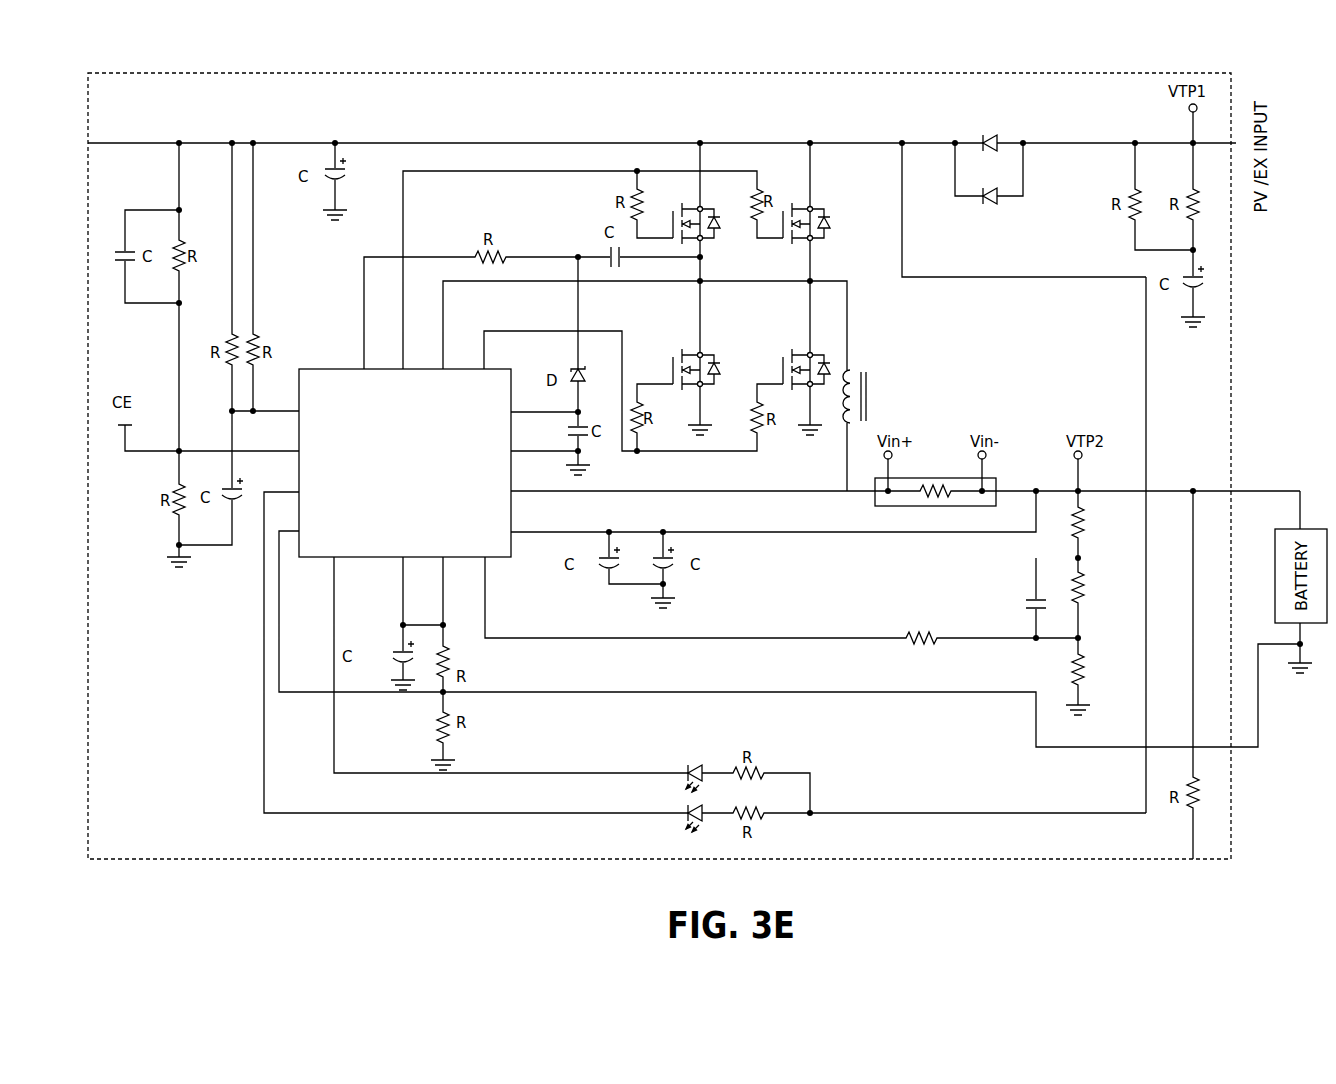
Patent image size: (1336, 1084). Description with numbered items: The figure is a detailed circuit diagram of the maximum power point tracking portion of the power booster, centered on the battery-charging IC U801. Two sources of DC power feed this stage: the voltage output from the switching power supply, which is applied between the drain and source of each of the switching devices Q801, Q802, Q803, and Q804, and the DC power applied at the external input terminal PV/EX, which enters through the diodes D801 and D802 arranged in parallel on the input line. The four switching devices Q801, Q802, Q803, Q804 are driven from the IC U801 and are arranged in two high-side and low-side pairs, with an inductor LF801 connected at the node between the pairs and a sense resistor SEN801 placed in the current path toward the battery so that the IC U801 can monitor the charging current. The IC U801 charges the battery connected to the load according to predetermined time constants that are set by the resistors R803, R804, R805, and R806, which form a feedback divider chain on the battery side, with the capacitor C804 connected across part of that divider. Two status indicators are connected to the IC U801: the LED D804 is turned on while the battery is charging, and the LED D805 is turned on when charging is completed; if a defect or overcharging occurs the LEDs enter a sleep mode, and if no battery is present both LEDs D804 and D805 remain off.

The IC U801 is at (405, 518).
The switching device Q801 is at (711, 232).
The switching device Q802 is at (679, 360).
The switching device Q803 is at (821, 232).
The switching device Q804 is at (793, 360).
The inductor LF801 is at (881, 396).
The diode D801 is at (988, 132).
The diode D802 is at (988, 206).
The LED D804 is at (692, 828).
The LED D805 is at (692, 768).
The current sense resistor SEN801 is at (935, 479).
The resistor R803 is at (1101, 523).
The resistor R804 is at (1101, 588).
The resistor R805 is at (1101, 670).
The resistor R806 is at (921, 627).
The feedback capacitor C804 is at (1010, 607).